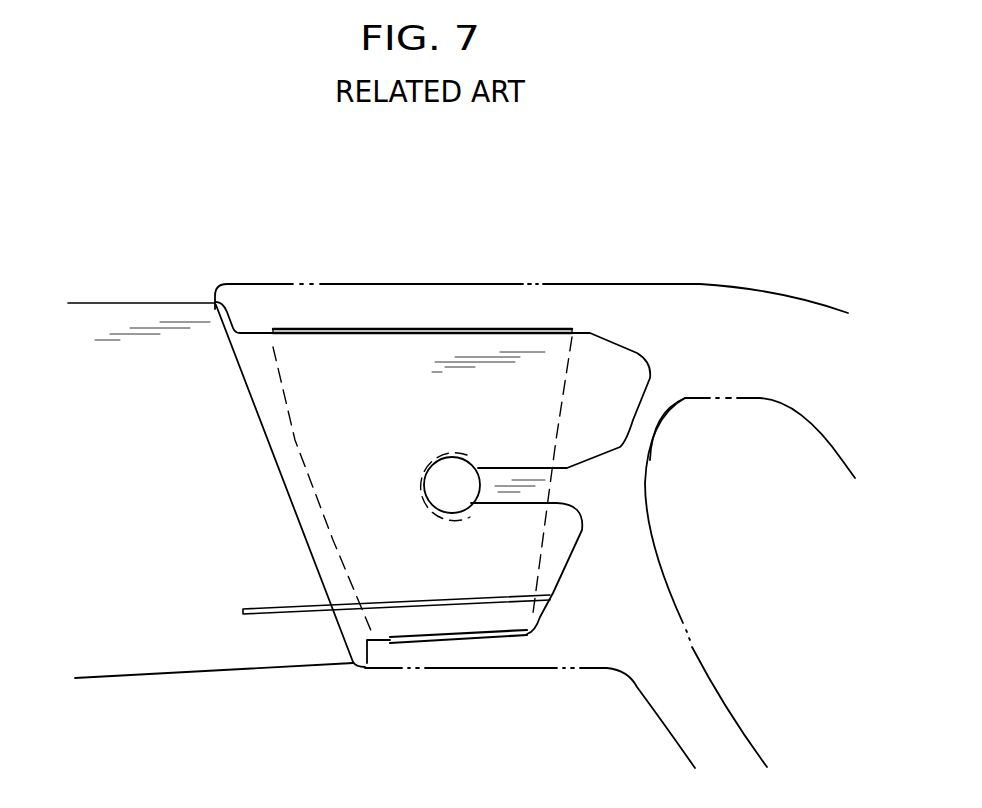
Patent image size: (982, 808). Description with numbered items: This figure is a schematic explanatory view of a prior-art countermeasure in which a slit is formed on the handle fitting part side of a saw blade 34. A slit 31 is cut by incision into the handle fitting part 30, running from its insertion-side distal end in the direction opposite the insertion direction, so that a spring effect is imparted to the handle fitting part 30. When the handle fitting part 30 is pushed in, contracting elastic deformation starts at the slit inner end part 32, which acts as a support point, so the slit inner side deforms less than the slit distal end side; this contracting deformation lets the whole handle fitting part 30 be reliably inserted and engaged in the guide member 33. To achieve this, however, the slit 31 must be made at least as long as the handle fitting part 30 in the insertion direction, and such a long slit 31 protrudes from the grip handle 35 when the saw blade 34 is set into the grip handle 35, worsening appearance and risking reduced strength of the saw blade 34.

The handle fitting part 30 is at (623, 373).
The slit 31 is at (317, 610).
The slit inner end part 32 is at (242, 611).
The guide member 33 is at (447, 330).
The saw blade 34 is at (170, 676).
The grip handle 35 is at (478, 670).